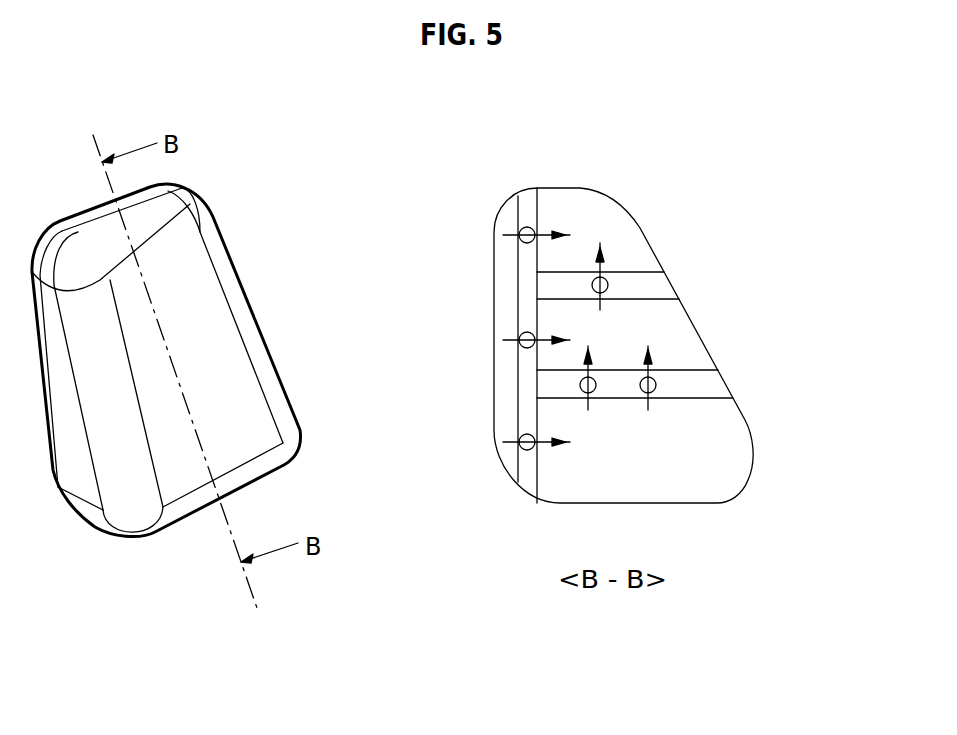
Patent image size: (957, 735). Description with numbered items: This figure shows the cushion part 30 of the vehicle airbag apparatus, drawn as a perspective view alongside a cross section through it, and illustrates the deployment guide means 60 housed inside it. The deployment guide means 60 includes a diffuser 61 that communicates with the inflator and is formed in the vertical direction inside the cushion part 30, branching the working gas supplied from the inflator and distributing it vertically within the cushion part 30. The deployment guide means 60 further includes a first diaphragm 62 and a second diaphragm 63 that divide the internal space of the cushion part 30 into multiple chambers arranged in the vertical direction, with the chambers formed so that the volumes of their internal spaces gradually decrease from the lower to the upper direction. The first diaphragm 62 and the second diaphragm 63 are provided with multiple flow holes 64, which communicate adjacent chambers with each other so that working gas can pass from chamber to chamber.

The cushion part 30 is at (225, 277).
The deployment guide means 60 is at (688, 331).
The diffuser 61 is at (527, 200).
The first diaphragm 62 is at (660, 285).
The second diaphragm 63 is at (715, 383).
The flow holes 64 is at (608, 285).